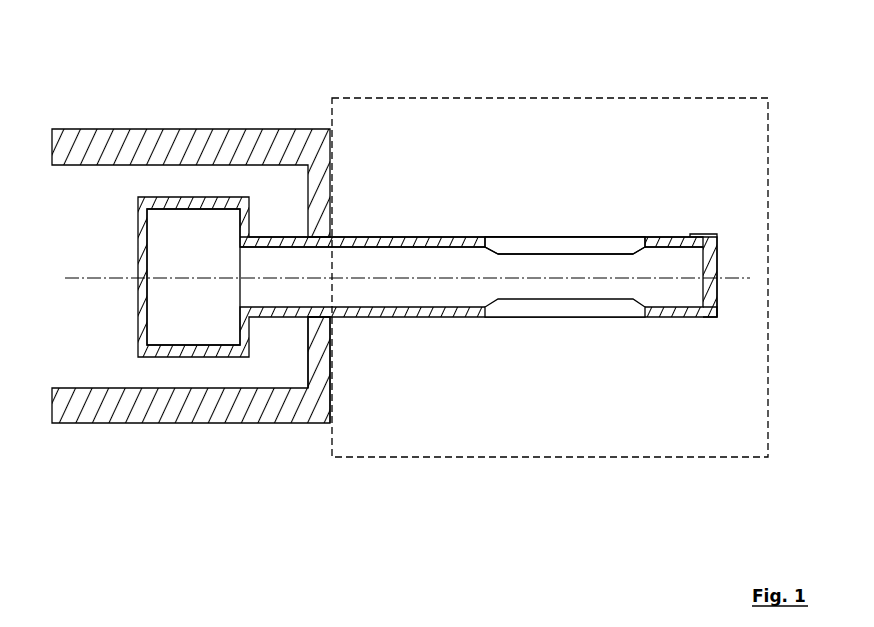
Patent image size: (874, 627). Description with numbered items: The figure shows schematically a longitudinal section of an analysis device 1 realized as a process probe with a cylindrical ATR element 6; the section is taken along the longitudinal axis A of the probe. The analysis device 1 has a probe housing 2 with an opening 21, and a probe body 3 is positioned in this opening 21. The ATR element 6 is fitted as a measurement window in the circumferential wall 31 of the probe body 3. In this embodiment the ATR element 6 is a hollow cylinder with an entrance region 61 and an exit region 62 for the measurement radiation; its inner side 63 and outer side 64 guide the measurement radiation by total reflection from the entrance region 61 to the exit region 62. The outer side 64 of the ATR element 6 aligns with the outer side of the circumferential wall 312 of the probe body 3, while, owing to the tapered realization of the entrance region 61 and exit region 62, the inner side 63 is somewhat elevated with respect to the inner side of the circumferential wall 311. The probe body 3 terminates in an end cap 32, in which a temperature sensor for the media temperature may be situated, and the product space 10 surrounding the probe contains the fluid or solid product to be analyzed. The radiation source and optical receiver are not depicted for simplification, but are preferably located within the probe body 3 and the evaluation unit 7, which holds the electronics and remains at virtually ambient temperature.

The analysis device 1 is at (428, 280).
The probe housing 2 is at (133, 129).
The opening 21 is at (331, 321).
The probe body 3 is at (292, 236).
The circumferential wall of the probe body 31 is at (437, 237).
The inner side of the circumferential wall 311 is at (717, 252).
The outer side of the circumferential wall 312 is at (703, 234).
The end cap 32 is at (717, 301).
The ATR element 6 is at (583, 237).
The entrance region 61 is at (650, 237).
The exit region 62 is at (493, 237).
The inner side of the ATR element 63 is at (523, 237).
The outer side of the ATR element 64 is at (558, 237).
The evaluation unit 7 is at (168, 256).
The product space 10 is at (550, 277).
The axis A is at (395, 278).